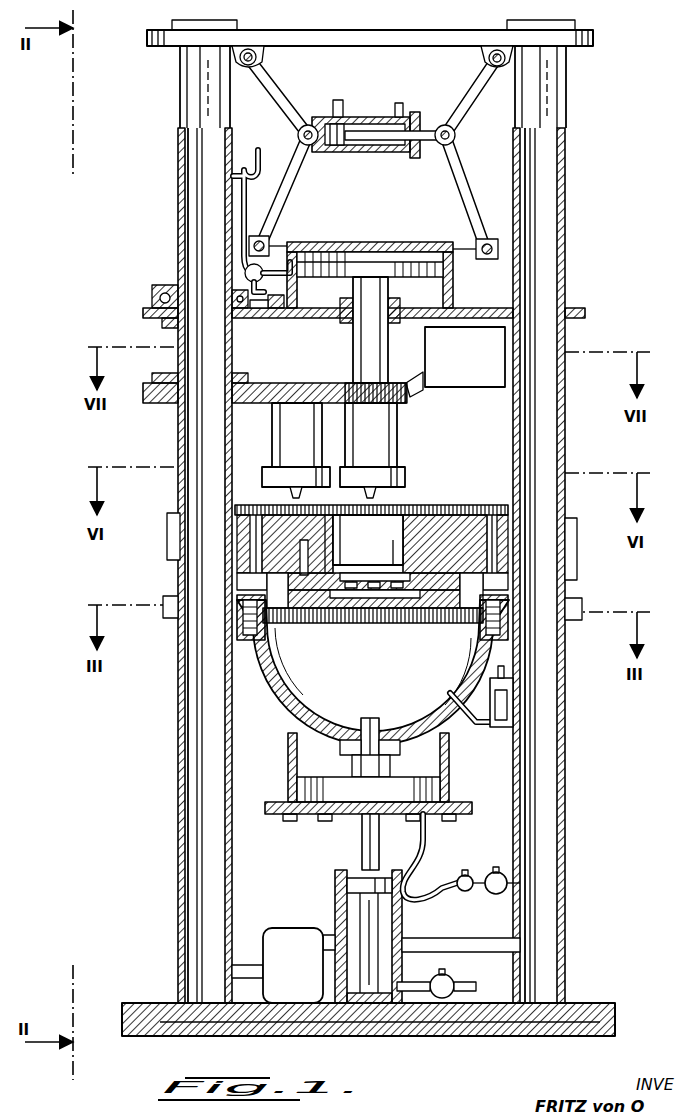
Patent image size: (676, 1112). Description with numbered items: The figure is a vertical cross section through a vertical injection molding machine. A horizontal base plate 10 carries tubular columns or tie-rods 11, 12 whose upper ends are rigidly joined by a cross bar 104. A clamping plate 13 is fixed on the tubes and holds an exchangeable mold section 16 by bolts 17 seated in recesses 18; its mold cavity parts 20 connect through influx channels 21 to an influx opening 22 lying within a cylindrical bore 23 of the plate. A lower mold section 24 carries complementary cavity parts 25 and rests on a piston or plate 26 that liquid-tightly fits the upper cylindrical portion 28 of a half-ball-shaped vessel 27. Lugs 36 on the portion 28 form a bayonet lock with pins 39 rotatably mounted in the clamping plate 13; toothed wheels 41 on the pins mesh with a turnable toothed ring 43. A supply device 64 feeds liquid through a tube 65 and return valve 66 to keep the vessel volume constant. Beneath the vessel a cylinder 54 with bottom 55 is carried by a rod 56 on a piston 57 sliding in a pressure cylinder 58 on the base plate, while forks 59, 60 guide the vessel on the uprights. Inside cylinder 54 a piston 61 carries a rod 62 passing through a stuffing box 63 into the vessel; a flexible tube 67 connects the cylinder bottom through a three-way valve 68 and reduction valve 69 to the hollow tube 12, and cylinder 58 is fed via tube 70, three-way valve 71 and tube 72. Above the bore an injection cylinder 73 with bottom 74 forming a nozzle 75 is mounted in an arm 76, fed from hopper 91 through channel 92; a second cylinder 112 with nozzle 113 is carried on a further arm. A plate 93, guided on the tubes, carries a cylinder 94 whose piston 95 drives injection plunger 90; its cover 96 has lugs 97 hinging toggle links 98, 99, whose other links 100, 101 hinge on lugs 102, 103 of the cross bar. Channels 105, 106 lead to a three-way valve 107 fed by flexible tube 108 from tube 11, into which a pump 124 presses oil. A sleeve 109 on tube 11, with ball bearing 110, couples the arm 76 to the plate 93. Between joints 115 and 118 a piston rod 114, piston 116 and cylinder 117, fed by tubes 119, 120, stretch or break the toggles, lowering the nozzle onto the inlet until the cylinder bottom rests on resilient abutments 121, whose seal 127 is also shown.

The base plate 10 is at (131, 1003).
The column or tie-rod 11 is at (177, 772).
The column or tie-rod 12 is at (565, 822).
The clamping plate 13 is at (462, 506).
The mold section 16 is at (288, 583).
The bolts 17 is at (325, 520).
The recesses 18 is at (316, 608).
The mold cavity parts 20 is at (397, 610).
The influx channels 21 is at (393, 566).
The influx opening 22 is at (377, 630).
The cylindrical bore 23 is at (393, 535).
The mold section 24 is at (442, 612).
The complementary cavity parts 25 is at (358, 612).
The piston or plate 26 is at (338, 612).
The vessel 27 is at (270, 688).
The cylindrical portion 28 is at (470, 630).
The lugs 36 is at (250, 632).
The bolts or pins 39 is at (250, 552).
The toothed wheels 41 is at (246, 508).
The ring 43 is at (430, 505).
The cylinder 54 is at (450, 778).
The bottom 55 is at (284, 820).
The rod 56 is at (362, 850).
The piston 57 is at (347, 888).
The pressure cylinder 58 is at (336, 912).
The fork 59 is at (168, 618).
The fork 60 is at (575, 620).
The piston 61 is at (305, 785).
The pin or rod 62 is at (372, 768).
The stuffing box 63 is at (380, 718).
The device or vessel 64 is at (508, 710).
The tube 65 is at (440, 728).
The return valve 66 is at (446, 694).
The flexible tube 67 is at (420, 898).
The three-way valve 68 is at (466, 892).
The adjustable reduction valve 69 is at (497, 895).
The tube 70 is at (420, 1003).
The three-way valve 71 is at (447, 1003).
The tube 72 is at (468, 1003).
The injection cylinder 73 is at (398, 434).
The bottom 74 is at (406, 476).
The nozzle 75 is at (380, 492).
The arm 76 is at (295, 388).
The injection plunger 90 is at (357, 357).
The container or hopper 91 is at (480, 388).
The connecting tube or channel 92 is at (416, 392).
The plate 93 is at (586, 314).
The cylinder 94 is at (455, 296).
The piston 95 is at (440, 272).
The cover 96 is at (372, 243).
The lugs 97 is at (274, 240).
The toggle links 98 is at (288, 196).
The toggle links 99 is at (457, 196).
The toggle links 100 is at (276, 94).
The toggle links 101 is at (472, 104).
The lug 102 is at (262, 57).
The lug 103 is at (490, 58).
The cross bar 104 is at (594, 40).
The channel 105 is at (285, 319).
The channel 106 is at (262, 320).
The three-way valve 107 is at (246, 268).
The flexible tube 108 is at (258, 162).
The sleeve 109 is at (178, 340).
The ball bearing 110 is at (156, 296).
The cylinder 112 is at (274, 421).
The injection nozzle 113 is at (266, 475).
The piston rod 114 is at (390, 150).
The joint 115 is at (456, 136).
The piston 116 is at (352, 122).
The cylinder 117 is at (353, 150).
The joint 118 is at (300, 136).
The tube 119 is at (338, 105).
The tube 120 is at (399, 104).
The resilient abutments 121 is at (340, 553).
The pump 124 is at (287, 945).
The seal 127 is at (350, 630).